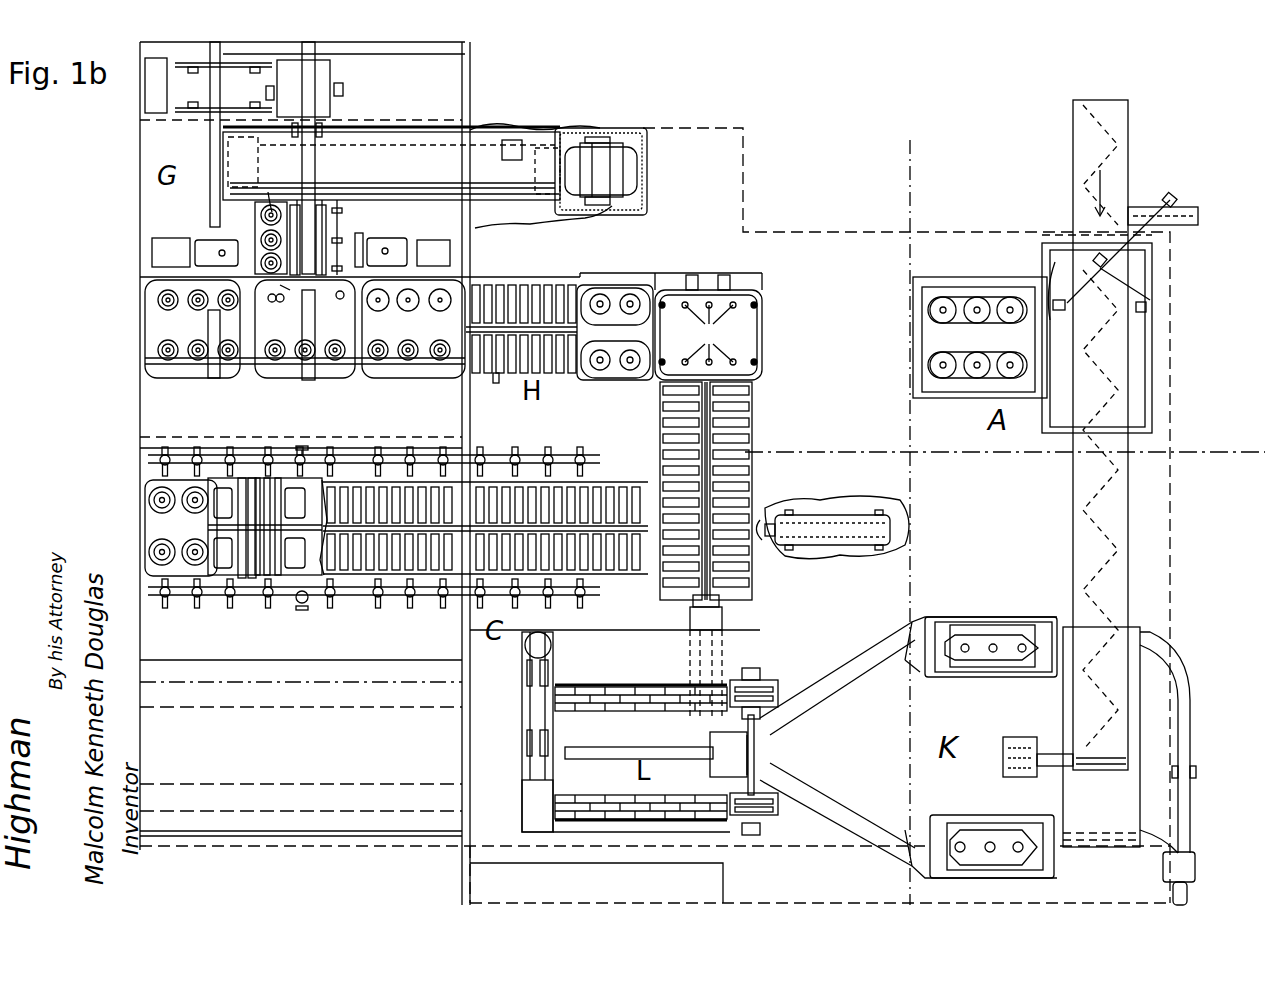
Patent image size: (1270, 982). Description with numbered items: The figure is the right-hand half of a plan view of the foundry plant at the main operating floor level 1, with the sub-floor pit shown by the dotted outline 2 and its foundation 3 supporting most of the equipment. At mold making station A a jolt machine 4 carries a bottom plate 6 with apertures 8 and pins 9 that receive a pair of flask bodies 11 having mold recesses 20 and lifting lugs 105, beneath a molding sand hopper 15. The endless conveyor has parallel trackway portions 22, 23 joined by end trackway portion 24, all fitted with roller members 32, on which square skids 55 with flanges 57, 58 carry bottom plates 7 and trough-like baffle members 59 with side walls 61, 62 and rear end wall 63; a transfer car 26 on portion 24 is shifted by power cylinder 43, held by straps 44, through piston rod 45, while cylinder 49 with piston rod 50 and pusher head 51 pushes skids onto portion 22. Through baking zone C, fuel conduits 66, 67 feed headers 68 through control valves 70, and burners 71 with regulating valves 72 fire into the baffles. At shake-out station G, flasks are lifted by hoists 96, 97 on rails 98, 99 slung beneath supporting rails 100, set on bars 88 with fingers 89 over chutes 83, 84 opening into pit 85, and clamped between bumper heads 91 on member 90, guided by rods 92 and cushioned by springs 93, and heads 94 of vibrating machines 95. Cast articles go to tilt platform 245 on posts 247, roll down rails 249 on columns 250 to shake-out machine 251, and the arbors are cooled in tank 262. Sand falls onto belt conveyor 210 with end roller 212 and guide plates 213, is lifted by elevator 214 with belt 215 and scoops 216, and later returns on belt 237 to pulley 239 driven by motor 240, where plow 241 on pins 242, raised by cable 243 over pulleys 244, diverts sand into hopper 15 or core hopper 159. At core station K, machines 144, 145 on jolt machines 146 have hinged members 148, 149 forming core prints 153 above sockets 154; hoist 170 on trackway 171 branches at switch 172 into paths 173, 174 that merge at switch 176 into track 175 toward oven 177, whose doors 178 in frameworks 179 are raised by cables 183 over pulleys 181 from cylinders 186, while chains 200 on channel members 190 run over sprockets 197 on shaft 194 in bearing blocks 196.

The main operating floor level 1 is at (1228, 438).
The dotted outline 2 is at (815, 231).
The foundation 3 is at (918, 165).
The jolt machine 4 is at (460, 68).
The bottom plate 6 is at (932, 290).
The bottom plate 7 is at (692, 277).
The apertures 8 is at (165, 490).
The post or pin 9 is at (664, 308).
The flask body 11 is at (432, 345).
The hopper or bin 15 is at (1140, 375).
The mold recesses 20 is at (630, 368).
The trackway portion 22 is at (610, 485).
The trackway portion 23 is at (496, 384).
The end trackway portion 24 is at (752, 488).
The cross-over or transfer car 26 is at (765, 330).
The roller members 32 is at (528, 298).
The power cylinder 43 is at (720, 605).
The straps 44 is at (720, 622).
The piston rod 45 is at (752, 470).
The power cylinder 49 is at (860, 530).
The piston rod 50 is at (790, 512).
The pusher head 51 is at (768, 516).
The skids or trucks 55 is at (330, 560).
The longitudinal flange 57 is at (280, 560).
The transverse flanges 58 is at (250, 578).
The baffle members 59 is at (295, 500).
The side wall 61 is at (252, 500).
The side wall 62 is at (240, 500).
The rear end wall 63 is at (181, 528).
The conduit 66 is at (148, 598).
The conduit 67 is at (335, 455).
The headers 68 is at (360, 455).
The control valves 70 is at (303, 446).
The burners 71 is at (178, 460).
The regulating valve 72 is at (222, 600).
The chute 83 is at (363, 234).
The chute 84 is at (257, 216).
The pit 85 is at (498, 131).
The supporting bar 88 is at (337, 205).
The fingers or plates 89 is at (350, 245).
The supporting member 90 is at (298, 280).
The bumper heads 91 is at (304, 234).
The guide rods 92 is at (322, 205).
The spring members 93 is at (297, 205).
The heads 94 is at (258, 242).
The clamping and vibrating machines 95 is at (160, 250).
The overhead hoist 96 is at (205, 323).
The overhead hoist 97 is at (330, 124).
The rail 98 is at (210, 150).
The rail 99 is at (312, 70).
The supporting rails 100 is at (400, 45).
The lugs or hooks 105 is at (926, 368).
The core member forming machine 144 is at (1000, 625).
The core member forming machine 145 is at (1000, 830).
The jolt machines 146 is at (1045, 628).
The hinged member 148 is at (970, 640).
The hinged member 149 is at (982, 660).
The core prints 153 is at (962, 645).
The sockets 154 is at (992, 645).
The hopper or bin 159 is at (1145, 632).
The travelling hoist 170 is at (1200, 772).
The overhead trackway 171 is at (1187, 898).
The switch 172 is at (1196, 864).
The parallel path 173 is at (920, 674).
The parallel path 174 is at (900, 838).
The single overhead track 175 is at (605, 758).
The switch 176 is at (712, 762).
The baking oven 177 is at (381, 747).
The doors 178 is at (545, 760).
The end frameworks 179 is at (522, 770).
The guide pulleys 181 is at (548, 672).
The cable 183 is at (522, 700).
The power cylinder 186 is at (527, 650).
The upper conveyor chain supporting member 190 is at (657, 712).
The horizontal shaft 194 is at (770, 740).
The end bearing blocks 196 is at (760, 682).
The sprockets 197 is at (762, 684).
The conveyor chains 200 is at (630, 686).
The conveyor belt 210 is at (391, 166).
The main end roller 212 is at (520, 198).
The guide plates 213 is at (506, 160).
The elevator 214 is at (622, 140).
The elevator belt 215 is at (622, 172).
The cups or scoops 216 is at (630, 186).
The conveyor belt 237 is at (1085, 138).
The end pulley 239 is at (1122, 780).
The motor 240 is at (1012, 740).
The plow member 241 is at (1110, 272).
The bearing pins 242 is at (1058, 296).
The pull wire or cable 243 is at (1145, 228).
The pulleys 244 is at (1162, 196).
The tilt table or transfer platform 245 is at (343, 100).
The supporting posts 247 is at (266, 93).
The rails 249 is at (188, 70).
The posts or columns 250 is at (223, 89).
The shake-out machine 251 is at (156, 105).
The cooling tank 262 is at (820, 883).